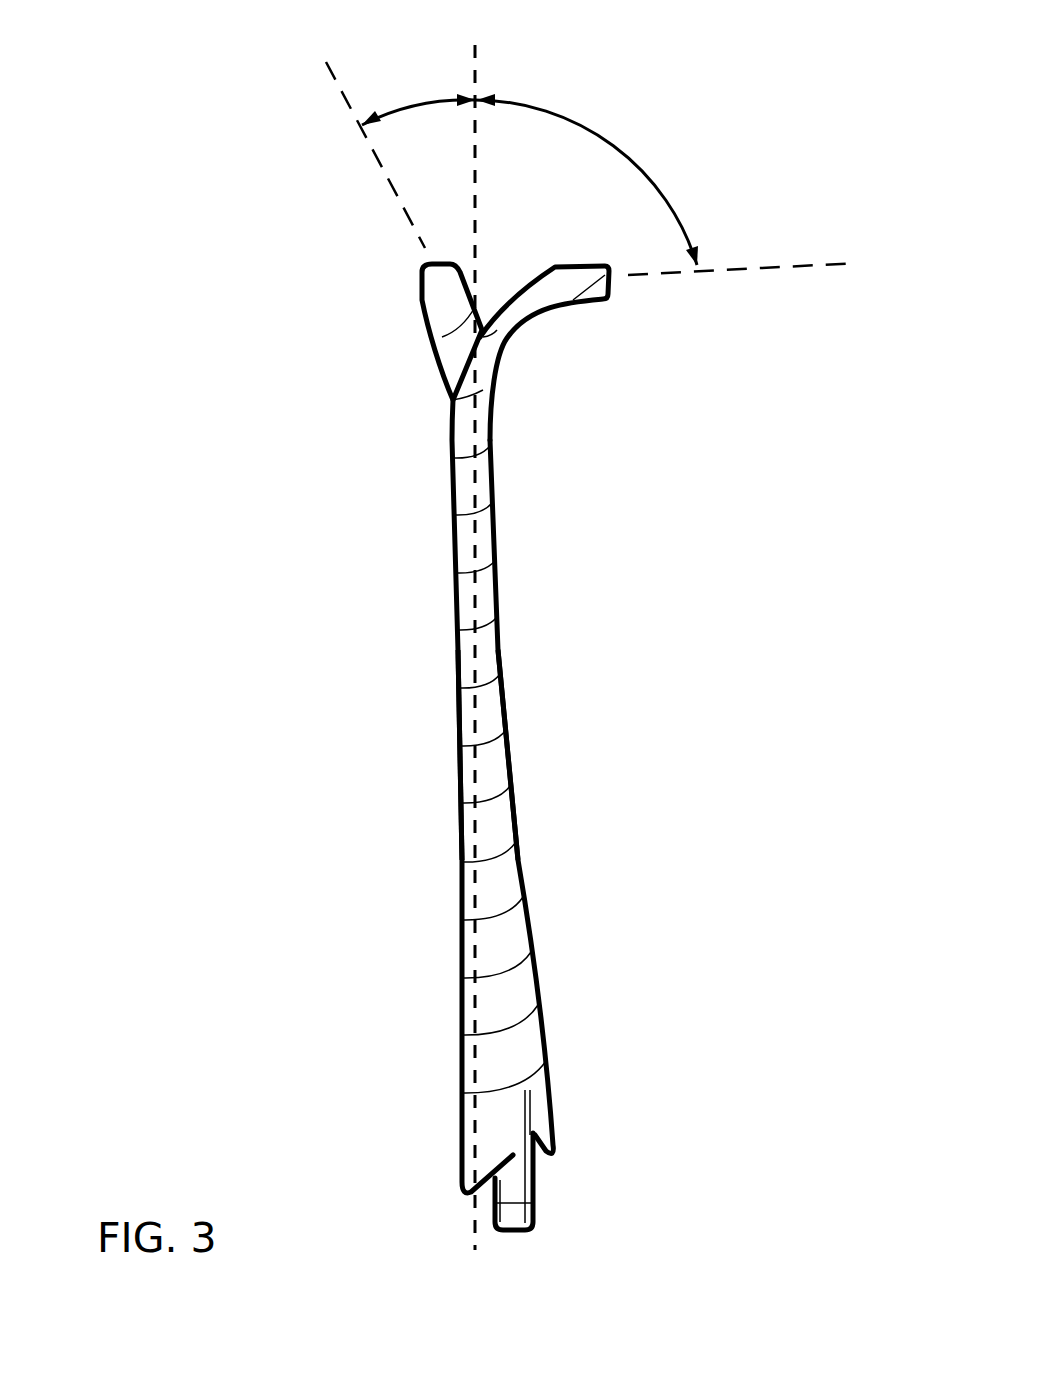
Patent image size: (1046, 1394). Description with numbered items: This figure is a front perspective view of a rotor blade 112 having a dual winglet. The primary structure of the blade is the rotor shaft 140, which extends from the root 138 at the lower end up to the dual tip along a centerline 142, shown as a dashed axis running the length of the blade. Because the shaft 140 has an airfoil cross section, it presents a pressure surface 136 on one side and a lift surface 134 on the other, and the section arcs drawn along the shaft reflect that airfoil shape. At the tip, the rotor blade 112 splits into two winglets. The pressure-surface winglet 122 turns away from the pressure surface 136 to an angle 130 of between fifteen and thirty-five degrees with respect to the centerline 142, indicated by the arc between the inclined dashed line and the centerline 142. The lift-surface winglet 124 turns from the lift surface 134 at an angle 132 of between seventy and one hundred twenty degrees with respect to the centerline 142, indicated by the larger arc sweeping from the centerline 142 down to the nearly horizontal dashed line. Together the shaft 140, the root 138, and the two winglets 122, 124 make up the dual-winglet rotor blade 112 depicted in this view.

The rotor blade 112 is at (127, 38).
The pressure-surface winglet 122 is at (440, 300).
The lift-surface winglet 124 is at (547, 290).
The angle 130 is at (408, 108).
The angle 132 is at (620, 150).
The lift surface 134 is at (530, 700).
The pressure surface 136 is at (432, 729).
The root 138 is at (485, 1115).
The rotor shaft 140 is at (487, 837).
The centerline 142 is at (477, 67).